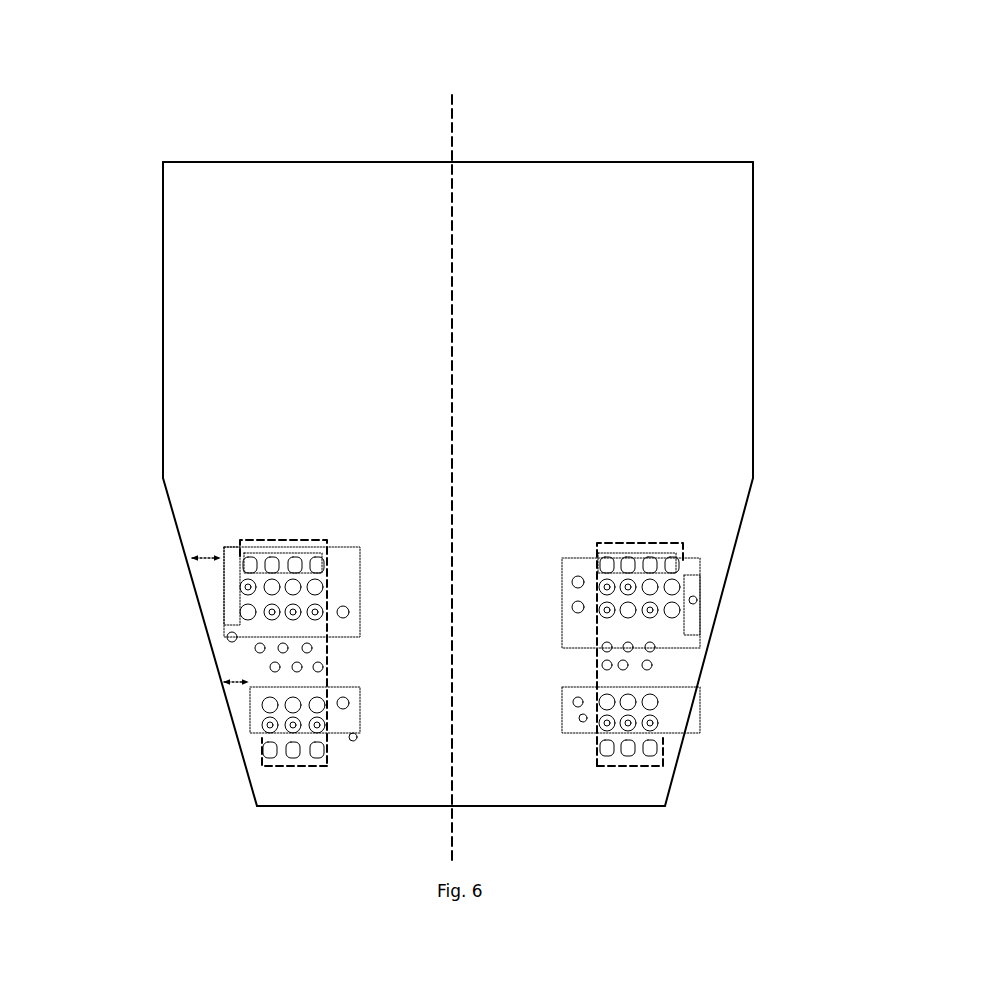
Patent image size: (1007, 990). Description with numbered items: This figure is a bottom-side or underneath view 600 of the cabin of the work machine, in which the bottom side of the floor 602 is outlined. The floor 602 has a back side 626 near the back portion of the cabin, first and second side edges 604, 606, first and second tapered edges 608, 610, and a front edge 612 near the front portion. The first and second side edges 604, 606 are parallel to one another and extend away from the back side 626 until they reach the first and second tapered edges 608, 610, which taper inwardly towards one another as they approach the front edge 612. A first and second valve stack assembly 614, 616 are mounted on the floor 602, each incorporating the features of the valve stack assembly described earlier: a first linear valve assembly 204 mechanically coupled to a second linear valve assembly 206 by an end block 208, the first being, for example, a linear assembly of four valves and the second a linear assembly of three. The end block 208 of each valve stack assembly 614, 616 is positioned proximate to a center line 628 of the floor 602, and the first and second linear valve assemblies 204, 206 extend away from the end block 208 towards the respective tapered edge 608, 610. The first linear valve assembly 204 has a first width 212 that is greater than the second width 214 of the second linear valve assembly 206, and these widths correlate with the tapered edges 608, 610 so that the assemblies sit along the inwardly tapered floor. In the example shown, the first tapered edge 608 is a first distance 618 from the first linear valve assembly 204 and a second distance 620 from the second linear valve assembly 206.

The bottom-side view 600 is at (135, 91).
The floor 602 is at (338, 266).
The first side edge 604 is at (163, 315).
The second side edge 606 is at (753, 238).
The first tapered edge 608 is at (180, 545).
The second tapered edge 610 is at (740, 530).
The front edge 612 is at (380, 808).
The first valve stack assembly 614 is at (382, 636).
The second valve stack assembly 616 is at (534, 641).
The first distance 618 is at (206, 563).
The second distance 620 is at (237, 687).
The back side 626 is at (374, 162).
The center line 628 is at (455, 149).
The first linear valve assembly 204 is at (339, 546).
The second linear valve assembly 206 is at (248, 754).
The end block 208 is at (580, 672).
The first width 212 is at (283, 540).
The second width 214 is at (292, 772).